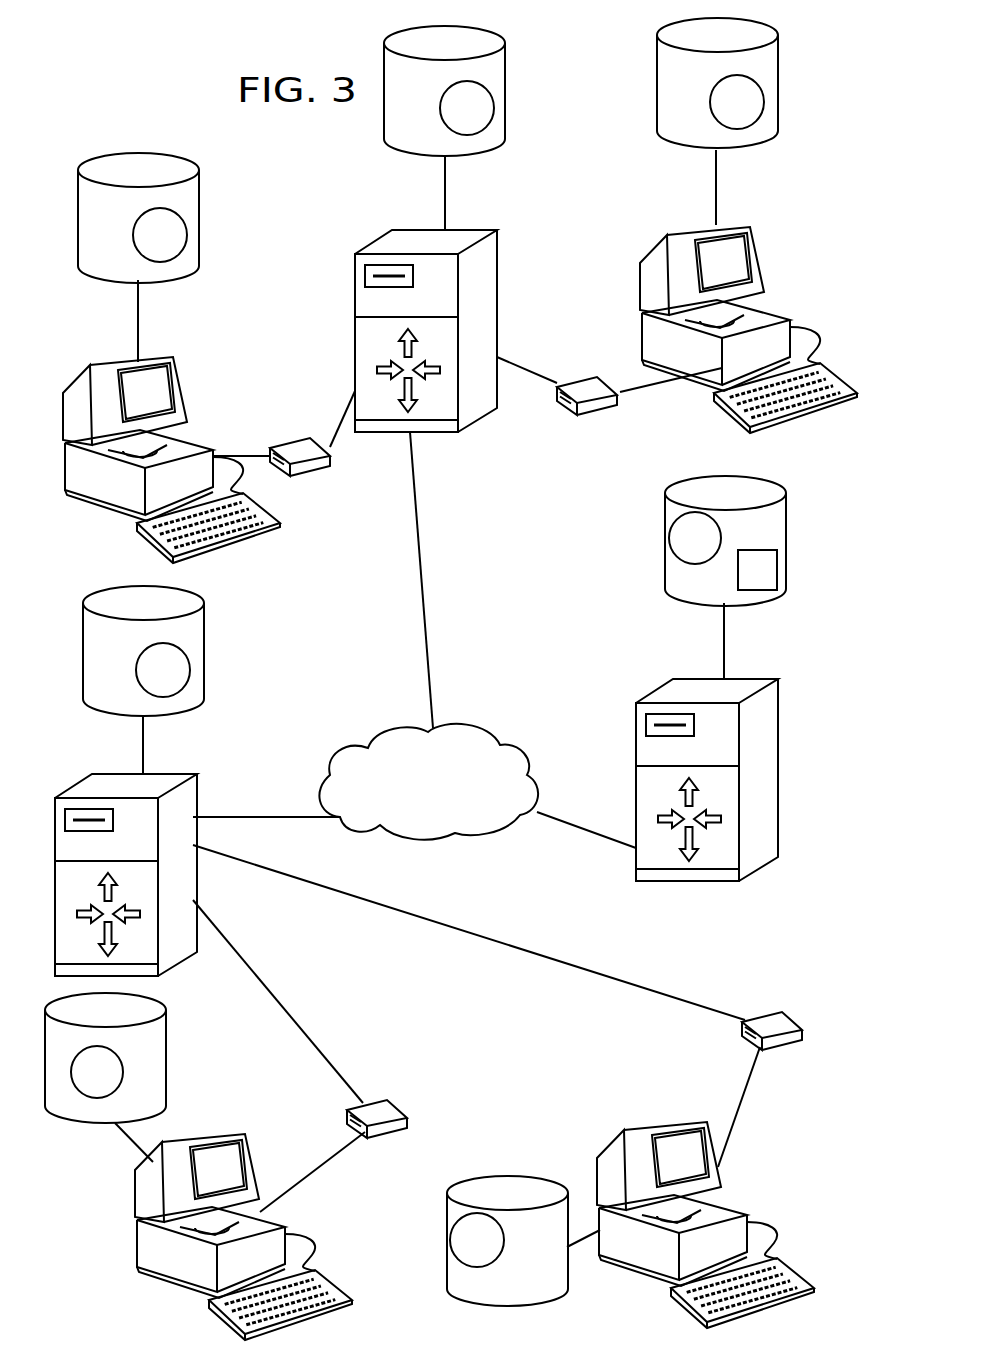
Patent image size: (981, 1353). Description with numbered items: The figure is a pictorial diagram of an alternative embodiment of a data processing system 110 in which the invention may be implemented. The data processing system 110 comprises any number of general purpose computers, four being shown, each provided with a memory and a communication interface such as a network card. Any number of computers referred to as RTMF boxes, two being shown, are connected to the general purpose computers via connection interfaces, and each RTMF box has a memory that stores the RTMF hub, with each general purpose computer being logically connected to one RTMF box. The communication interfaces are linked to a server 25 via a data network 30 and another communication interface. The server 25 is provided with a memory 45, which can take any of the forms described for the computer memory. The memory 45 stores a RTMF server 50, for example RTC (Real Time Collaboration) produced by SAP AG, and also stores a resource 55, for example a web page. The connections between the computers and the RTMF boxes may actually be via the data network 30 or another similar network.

The data processing system 110 is at (149, 62).
The server 25 is at (655, 697).
The data network 30 is at (483, 745).
The memory 45 is at (786, 512).
The RTMF server 50 is at (681, 565).
The resource 55 is at (777, 565).